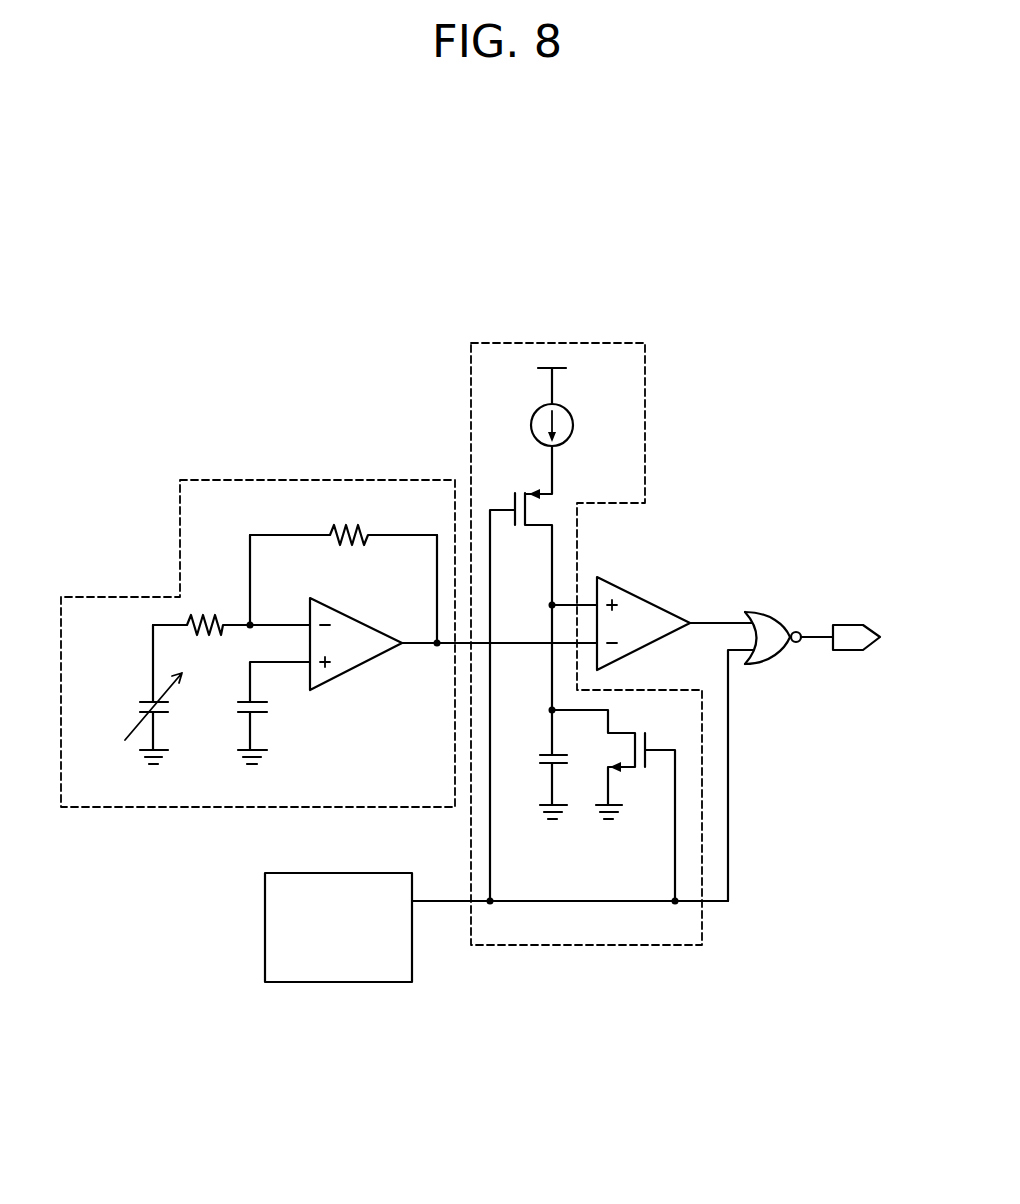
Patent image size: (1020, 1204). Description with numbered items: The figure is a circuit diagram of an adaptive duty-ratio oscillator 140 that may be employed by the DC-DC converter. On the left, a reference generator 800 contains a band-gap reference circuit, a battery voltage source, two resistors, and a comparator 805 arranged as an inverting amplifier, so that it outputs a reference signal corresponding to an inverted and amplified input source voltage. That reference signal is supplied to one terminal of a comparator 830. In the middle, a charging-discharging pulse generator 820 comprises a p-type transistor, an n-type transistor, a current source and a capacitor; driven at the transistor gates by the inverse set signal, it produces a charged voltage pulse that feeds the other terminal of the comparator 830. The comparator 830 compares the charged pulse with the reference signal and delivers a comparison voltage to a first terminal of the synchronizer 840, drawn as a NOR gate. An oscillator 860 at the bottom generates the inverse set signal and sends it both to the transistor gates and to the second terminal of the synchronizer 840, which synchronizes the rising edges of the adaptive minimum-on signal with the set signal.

The adaptive duty-ratio oscillator 140 is at (477, 231).
The reference generator 800 is at (343, 480).
The comparator 805 is at (360, 674).
The charging-discharging pulse generator 820 is at (560, 343).
The comparator 830 is at (673, 637).
The synchronizer 840 is at (767, 666).
The oscillator 860 is at (265, 926).